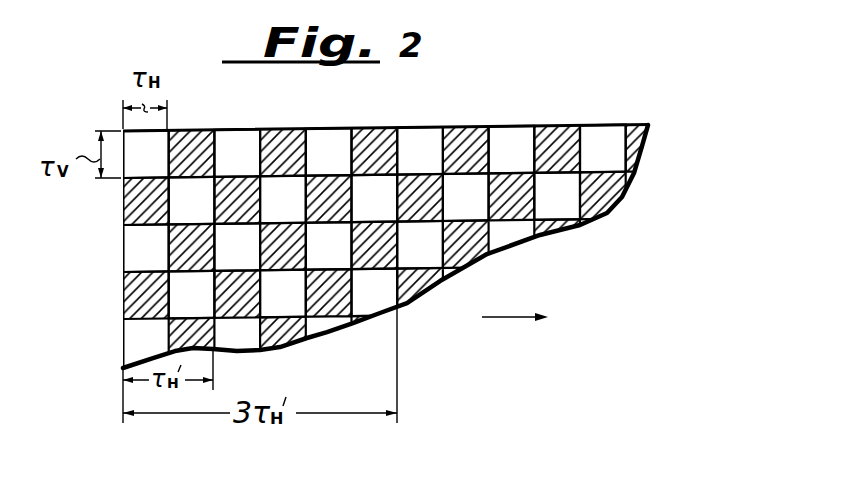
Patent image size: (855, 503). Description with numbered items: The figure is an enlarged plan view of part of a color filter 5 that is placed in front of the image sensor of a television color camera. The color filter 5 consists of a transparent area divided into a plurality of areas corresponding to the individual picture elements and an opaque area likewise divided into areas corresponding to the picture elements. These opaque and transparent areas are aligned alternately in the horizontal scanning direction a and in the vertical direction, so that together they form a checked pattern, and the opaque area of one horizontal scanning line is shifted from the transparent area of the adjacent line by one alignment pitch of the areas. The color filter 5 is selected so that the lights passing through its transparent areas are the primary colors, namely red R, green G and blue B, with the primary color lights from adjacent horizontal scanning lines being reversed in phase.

The color filter 5 is at (392, 114).
The red color light R is at (351, 222).
The green color light G is at (374, 222).
The blue color light B is at (397, 222).
The horizontal scanning direction a is at (524, 320).